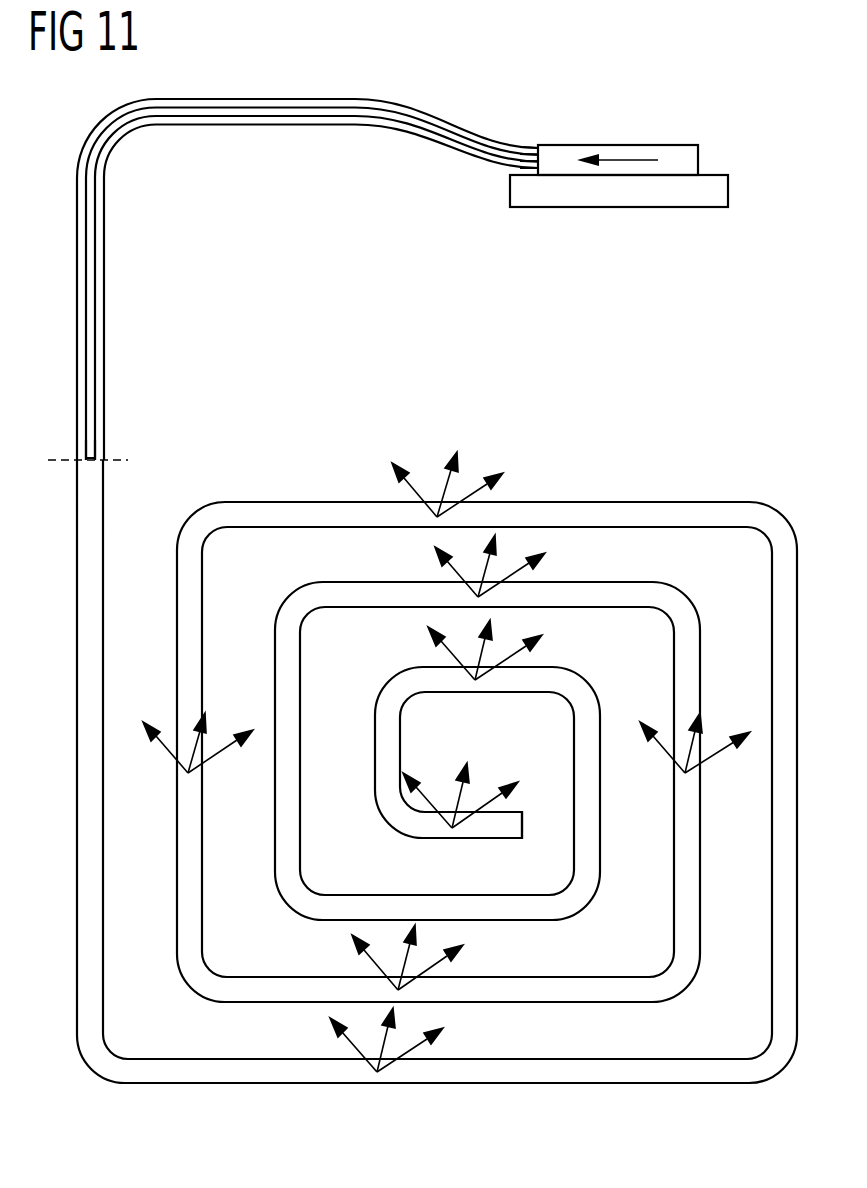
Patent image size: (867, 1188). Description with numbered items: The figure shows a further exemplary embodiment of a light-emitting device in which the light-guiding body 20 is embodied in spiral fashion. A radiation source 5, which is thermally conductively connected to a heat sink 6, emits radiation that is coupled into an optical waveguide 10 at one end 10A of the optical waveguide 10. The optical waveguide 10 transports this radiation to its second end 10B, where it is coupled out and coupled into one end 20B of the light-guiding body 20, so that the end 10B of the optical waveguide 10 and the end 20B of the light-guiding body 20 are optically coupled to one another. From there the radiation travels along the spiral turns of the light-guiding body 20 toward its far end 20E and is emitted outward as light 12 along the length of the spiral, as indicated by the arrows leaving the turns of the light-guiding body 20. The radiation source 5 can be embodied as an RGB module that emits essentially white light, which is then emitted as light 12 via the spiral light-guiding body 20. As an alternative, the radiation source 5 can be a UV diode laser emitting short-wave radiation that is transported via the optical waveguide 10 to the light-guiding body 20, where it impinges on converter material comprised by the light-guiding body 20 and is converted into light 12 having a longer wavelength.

The radiation source 5 is at (667, 150).
The heat sink 6 is at (622, 195).
The optical waveguide 10 is at (255, 125).
The end of the optical waveguide 10A is at (525, 143).
The second end of the optical waveguide 10B is at (106, 456).
The light 12 is at (468, 495).
The light-guiding body 20 is at (660, 500).
The end of the light-guiding body 20B is at (77, 462).
The end of coil 20E is at (524, 820).